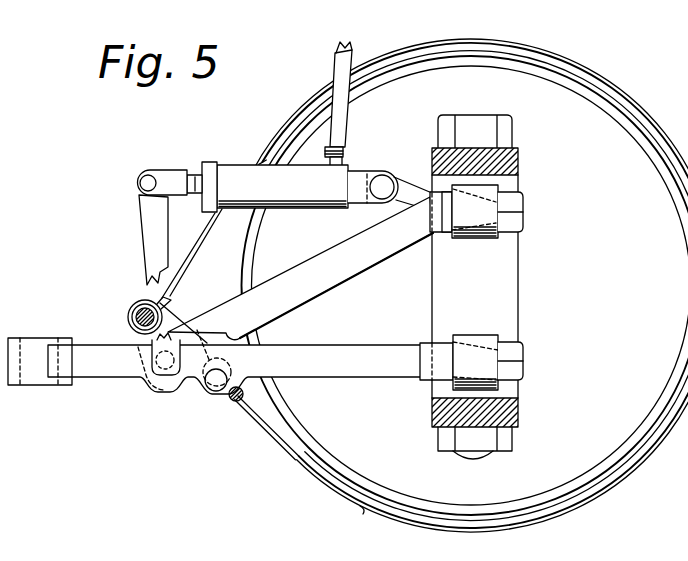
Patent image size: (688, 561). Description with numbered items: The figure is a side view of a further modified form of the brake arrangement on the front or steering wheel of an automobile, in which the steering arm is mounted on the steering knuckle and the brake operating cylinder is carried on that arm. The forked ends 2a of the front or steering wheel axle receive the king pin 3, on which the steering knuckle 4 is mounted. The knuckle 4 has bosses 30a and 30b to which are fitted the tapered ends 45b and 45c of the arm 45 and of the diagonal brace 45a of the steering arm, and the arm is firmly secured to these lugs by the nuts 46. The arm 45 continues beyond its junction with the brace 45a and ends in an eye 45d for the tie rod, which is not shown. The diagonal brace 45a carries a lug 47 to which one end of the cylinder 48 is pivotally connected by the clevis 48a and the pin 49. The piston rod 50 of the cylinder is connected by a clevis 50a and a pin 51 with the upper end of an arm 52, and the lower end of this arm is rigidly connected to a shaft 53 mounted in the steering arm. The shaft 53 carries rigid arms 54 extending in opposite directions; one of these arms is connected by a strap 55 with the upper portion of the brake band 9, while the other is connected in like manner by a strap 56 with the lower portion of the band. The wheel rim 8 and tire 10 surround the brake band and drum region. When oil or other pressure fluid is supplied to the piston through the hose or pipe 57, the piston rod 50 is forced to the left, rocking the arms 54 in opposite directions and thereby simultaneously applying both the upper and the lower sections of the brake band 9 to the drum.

The forked ends of the front or steering wheel axle 2a is at (520, 163).
The king pin 3 is at (493, 462).
The steering knuckle 4 is at (511, 282).
The wheel rim 8 is at (484, 504).
The brake band 9 is at (405, 525).
The tire sidewall 10 is at (602, 485).
The boss 30a is at (490, 342).
The boss 30b is at (500, 241).
The arm 45 is at (355, 347).
The diagonal brace 45a is at (334, 287).
The tapered end 45b is at (472, 335).
The tapered end 45c is at (458, 240).
The eye 45d is at (59, 388).
The nuts 46 is at (516, 212).
The lug 47 is at (414, 174).
The cylinder 48 is at (275, 187).
The clevis 48a is at (364, 170).
The pin 49 is at (391, 176).
The piston rod 50 is at (189, 172).
The clevis 50a is at (168, 178).
The pin 51 is at (139, 183).
The arm 52 is at (147, 247).
The shaft 53 is at (168, 360).
The arms 54 is at (131, 322).
The strap 55 is at (191, 256).
The strap 56 is at (285, 450).
The hose or pipe 57 is at (334, 68).